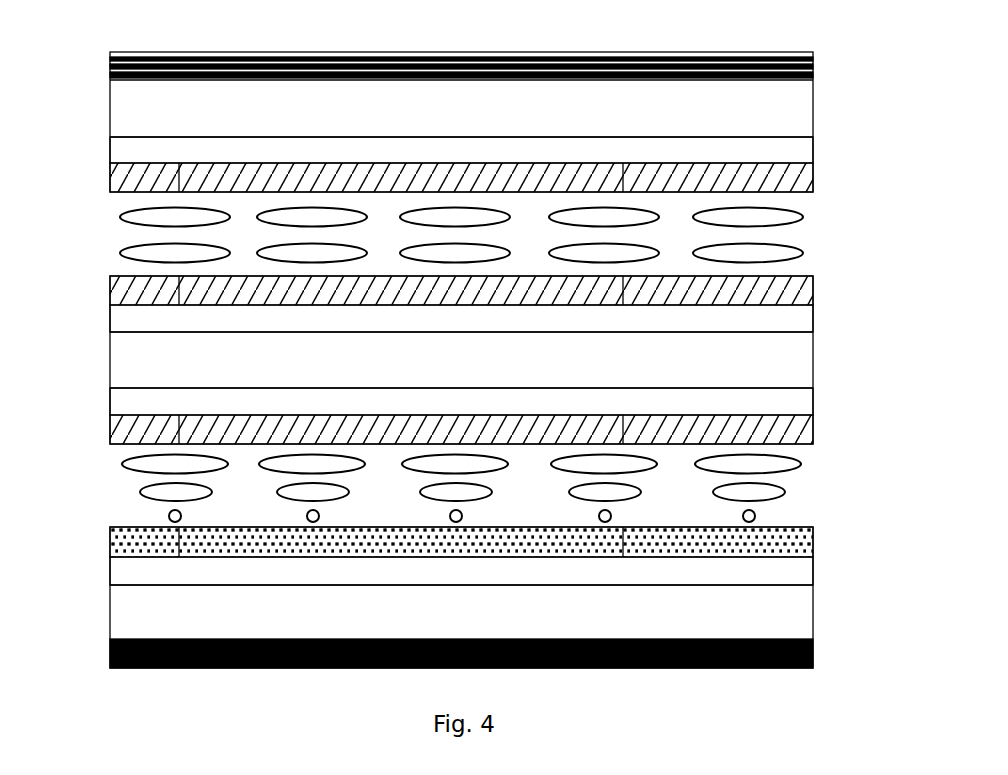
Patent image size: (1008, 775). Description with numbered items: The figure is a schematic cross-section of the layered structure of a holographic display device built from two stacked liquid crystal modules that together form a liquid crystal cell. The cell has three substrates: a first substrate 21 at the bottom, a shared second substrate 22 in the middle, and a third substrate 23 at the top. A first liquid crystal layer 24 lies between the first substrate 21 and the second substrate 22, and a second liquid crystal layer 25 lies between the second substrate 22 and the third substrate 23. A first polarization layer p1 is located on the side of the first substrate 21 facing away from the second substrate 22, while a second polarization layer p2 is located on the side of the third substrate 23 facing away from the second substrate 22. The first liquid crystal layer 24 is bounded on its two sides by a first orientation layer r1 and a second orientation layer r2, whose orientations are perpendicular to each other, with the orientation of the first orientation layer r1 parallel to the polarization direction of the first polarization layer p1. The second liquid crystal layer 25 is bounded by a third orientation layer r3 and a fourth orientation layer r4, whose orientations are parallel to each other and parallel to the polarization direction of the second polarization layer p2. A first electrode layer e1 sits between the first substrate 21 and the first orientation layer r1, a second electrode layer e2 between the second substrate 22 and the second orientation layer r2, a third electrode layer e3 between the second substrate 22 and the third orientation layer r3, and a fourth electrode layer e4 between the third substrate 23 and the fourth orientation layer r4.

The first substrate 21 is at (110, 612).
The second substrate 22 is at (110, 361).
The third substrate 23 is at (110, 109).
The first liquid crystal layer 24 is at (128, 483).
The second liquid crystal layer 25 is at (128, 238).
The first polarization layer p1 is at (813, 655).
The second polarization layer p2 is at (813, 65).
The first electrode layer e1 is at (813, 570).
The second electrode layer e2 is at (813, 403).
The third electrode layer e3 is at (813, 318).
The fourth electrode layer e4 is at (813, 149).
The first orientation layer r1 is at (813, 543).
The second orientation layer r2 is at (813, 431).
The third orientation layer r3 is at (813, 289).
The fourth orientation layer r4 is at (813, 177).